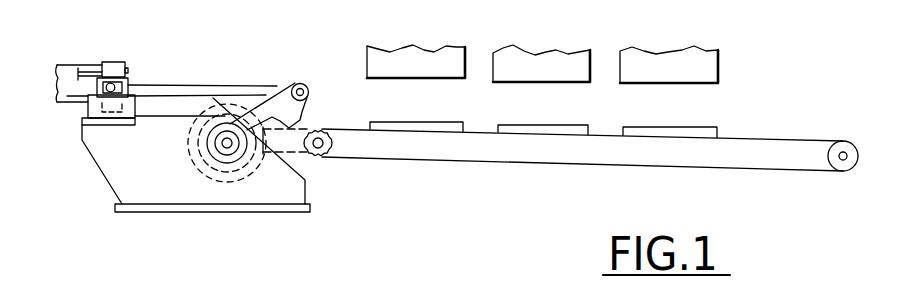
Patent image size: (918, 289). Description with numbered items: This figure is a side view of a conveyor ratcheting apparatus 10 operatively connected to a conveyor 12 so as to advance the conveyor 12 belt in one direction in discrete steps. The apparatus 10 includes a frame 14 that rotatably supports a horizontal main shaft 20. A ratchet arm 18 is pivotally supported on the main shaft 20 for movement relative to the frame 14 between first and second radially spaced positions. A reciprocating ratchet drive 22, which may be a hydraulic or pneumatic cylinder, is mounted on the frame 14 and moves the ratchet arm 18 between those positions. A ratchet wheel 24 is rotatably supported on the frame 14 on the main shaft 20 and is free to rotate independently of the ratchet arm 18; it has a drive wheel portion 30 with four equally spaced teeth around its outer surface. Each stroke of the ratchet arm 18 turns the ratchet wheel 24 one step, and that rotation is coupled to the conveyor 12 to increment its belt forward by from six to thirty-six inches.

The conveyor ratcheting apparatus 10 is at (173, 38).
The conveyor 12 is at (763, 137).
The frame 14 is at (122, 172).
The ratchet arm 18 is at (270, 90).
The main shaft 20 is at (224, 150).
The reciprocating ratchet drive 22 is at (65, 72).
The ratchet wheel 24 is at (196, 167).
The drive wheel portion 30 is at (253, 183).